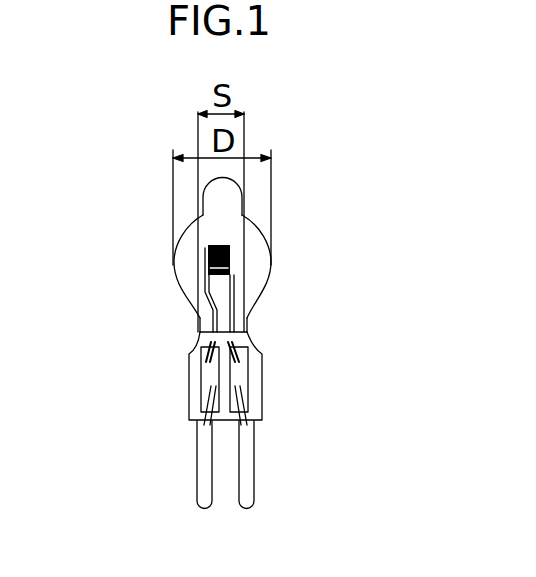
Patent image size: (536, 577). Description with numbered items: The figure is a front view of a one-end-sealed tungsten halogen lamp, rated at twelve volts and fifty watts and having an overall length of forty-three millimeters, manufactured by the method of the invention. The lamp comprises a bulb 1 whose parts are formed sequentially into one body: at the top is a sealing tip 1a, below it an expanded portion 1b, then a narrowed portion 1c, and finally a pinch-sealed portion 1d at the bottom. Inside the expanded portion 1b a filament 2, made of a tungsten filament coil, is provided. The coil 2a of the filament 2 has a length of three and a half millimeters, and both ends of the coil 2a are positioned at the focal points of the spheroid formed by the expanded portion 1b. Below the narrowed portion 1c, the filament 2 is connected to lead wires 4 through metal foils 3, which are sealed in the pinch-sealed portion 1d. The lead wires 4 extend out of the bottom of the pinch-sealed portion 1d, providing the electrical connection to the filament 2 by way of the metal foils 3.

The bulb 1 is at (318, 284).
The sealing tip 1a is at (230, 193).
The expanded portion 1b is at (257, 263).
The narrowed portion 1c is at (240, 317).
The pinch-sealed portion 1d is at (288, 372).
The filament 2 is at (225, 288).
The coil 2a is at (208, 247).
The metal foils 3 is at (208, 380).
The lead wires 4 is at (202, 481).